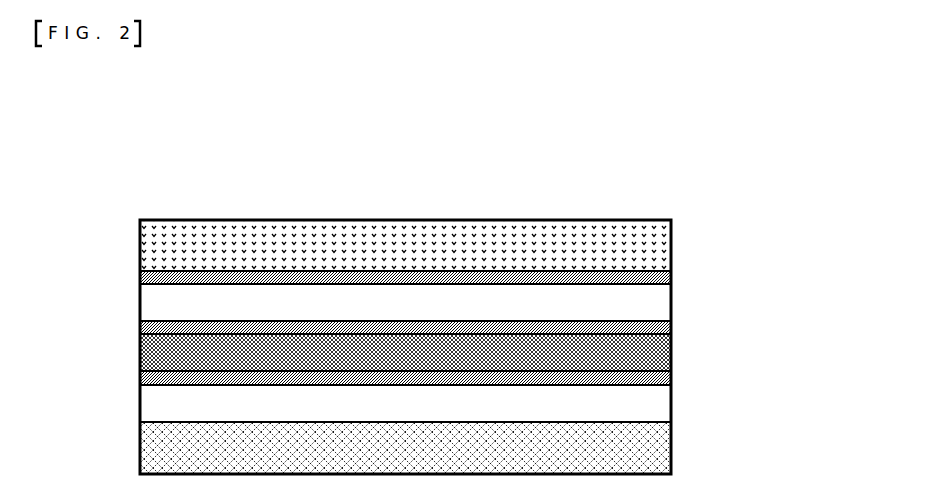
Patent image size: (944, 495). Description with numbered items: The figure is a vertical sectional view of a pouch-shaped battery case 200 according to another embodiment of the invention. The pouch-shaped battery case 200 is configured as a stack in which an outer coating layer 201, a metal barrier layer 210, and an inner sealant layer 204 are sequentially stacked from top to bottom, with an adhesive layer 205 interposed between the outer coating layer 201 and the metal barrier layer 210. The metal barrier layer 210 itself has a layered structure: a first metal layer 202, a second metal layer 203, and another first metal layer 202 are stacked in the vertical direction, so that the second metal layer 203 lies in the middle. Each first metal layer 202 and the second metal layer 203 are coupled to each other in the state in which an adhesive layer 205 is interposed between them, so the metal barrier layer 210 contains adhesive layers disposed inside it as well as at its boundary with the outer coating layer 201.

The pouch-shaped battery case 200 is at (118, 160).
The outer coating layer 201 is at (672, 233).
The first metal layer 202 is at (672, 298).
The second metal layer 203 is at (672, 355).
The inner sealant layer 204 is at (672, 448).
The adhesive layer 205 is at (672, 274).
The metal barrier layer 210 is at (797, 281).